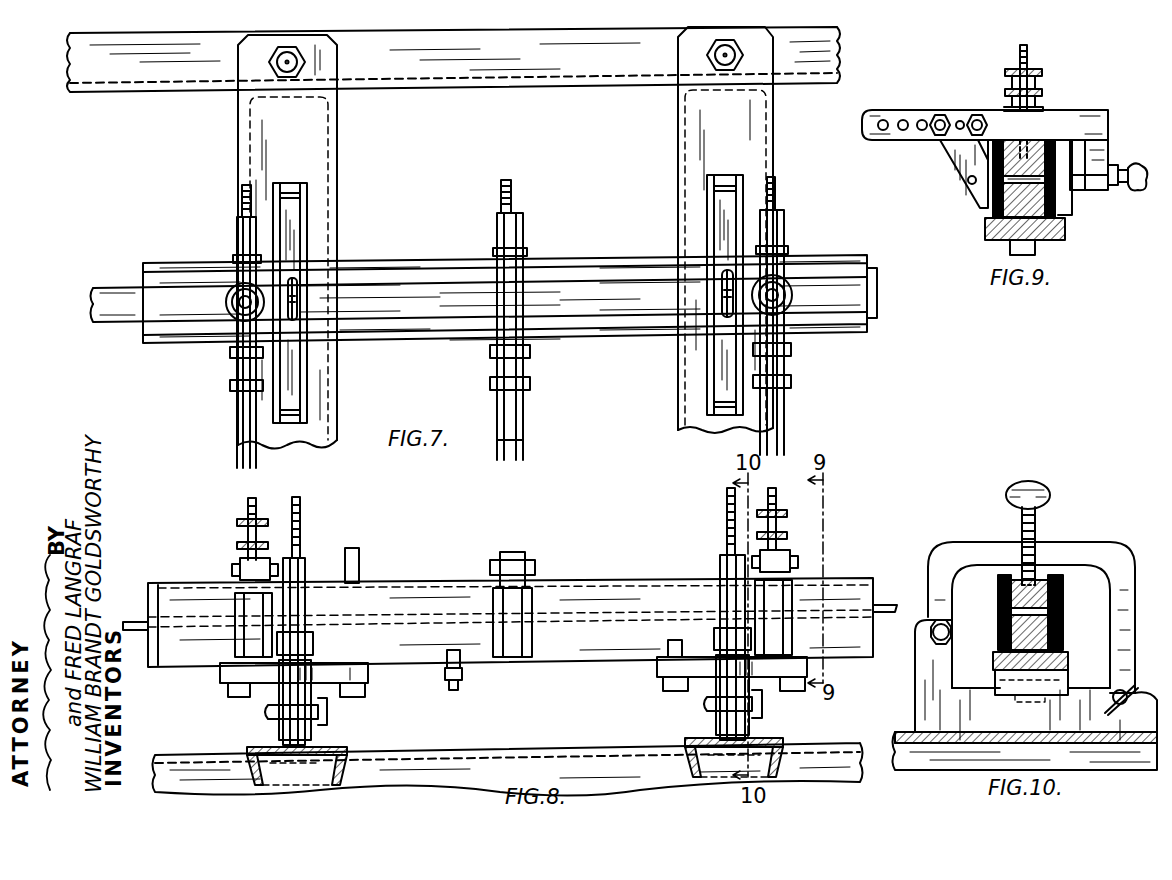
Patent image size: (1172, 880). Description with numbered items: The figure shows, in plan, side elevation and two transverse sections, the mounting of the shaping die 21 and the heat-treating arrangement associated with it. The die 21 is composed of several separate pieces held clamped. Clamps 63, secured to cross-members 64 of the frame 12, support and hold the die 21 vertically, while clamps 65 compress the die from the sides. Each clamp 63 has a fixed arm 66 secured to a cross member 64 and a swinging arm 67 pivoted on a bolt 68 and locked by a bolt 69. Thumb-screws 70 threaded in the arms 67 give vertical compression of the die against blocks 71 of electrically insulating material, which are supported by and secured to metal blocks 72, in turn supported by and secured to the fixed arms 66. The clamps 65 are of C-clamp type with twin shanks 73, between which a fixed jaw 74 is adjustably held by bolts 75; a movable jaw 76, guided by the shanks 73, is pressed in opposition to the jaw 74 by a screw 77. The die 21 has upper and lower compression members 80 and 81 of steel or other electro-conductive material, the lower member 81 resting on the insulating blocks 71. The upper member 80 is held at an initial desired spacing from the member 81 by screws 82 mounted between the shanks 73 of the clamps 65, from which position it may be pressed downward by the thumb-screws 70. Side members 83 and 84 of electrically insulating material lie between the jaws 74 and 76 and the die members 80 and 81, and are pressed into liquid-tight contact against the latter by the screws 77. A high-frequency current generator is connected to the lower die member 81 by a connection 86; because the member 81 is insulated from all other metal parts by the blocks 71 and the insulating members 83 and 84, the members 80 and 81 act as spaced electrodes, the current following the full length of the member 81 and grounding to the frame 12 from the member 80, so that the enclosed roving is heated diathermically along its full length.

In FIG. 7, the frame 12 is at (160, 85).
In FIG. 8, the frame 12 is at (558, 754).
In FIG. 7, the shaping die 21 is at (447, 345).
In FIG. 8, the shaping die 21 is at (571, 580).
In FIG. 7, the clamps 63 is at (300, 242).
In FIG. 8, the clamps 63 is at (305, 566).
In FIG. 10, the clamps 63 is at (1078, 542).
In FIG. 7, the cross-members 64 is at (340, 150).
In FIG. 8, the cross-members 64 is at (347, 750).
In FIG. 10, the cross-members 64 is at (910, 733).
In FIG. 7, the clamps 65 is at (237, 240).
In FIG. 8, the clamps 65 is at (513, 604).
In FIG. 9, the clamps 65 is at (1088, 110).
In FIG. 10, the fixed arm 66 is at (1090, 692).
In FIG. 10, the swinging arm 67 is at (1135, 620).
In FIG. 10, the bolt 68 is at (947, 624).
In FIG. 8, the bolt 69 is at (328, 712).
In FIG. 10, the bolt 69 is at (1128, 690).
In FIG. 7, the thumb-screws 70 is at (298, 312).
In FIG. 8, the thumb-screws 70 is at (301, 505).
In FIG. 10, the thumb-screws 70 is at (1026, 482).
In FIG. 9, the blocks 71 is at (985, 228).
In FIG. 10, the blocks 71 is at (993, 660).
In FIG. 8, the metal blocks 72 is at (222, 681).
In FIG. 10, the metal blocks 72 is at (995, 682).
In FIG. 7, the twin shanks 73 is at (497, 442).
In FIG. 9, the twin shanks 73 is at (890, 110).
In FIG. 9, the fixed jaw 74 is at (960, 150).
In FIG. 9, the bolts 75 is at (978, 115).
In FIG. 9, the movable jaw 76 is at (1072, 202).
In FIG. 7, the screw 77 is at (240, 197).
In FIG. 9, the screw 77 is at (1136, 192).
In FIG. 9, the upper compression member 80 is at (1035, 140).
In FIG. 10, the upper compression member 80 is at (1022, 580).
In FIG. 9, the lower compression member 81 is at (1055, 210).
In FIG. 10, the lower compression member 81 is at (1050, 632).
In FIG. 7, the screws 82 is at (232, 312).
In FIG. 8, the screws 82 is at (237, 521).
In FIG. 9, the screws 82 is at (1030, 72).
In FIG. 7, the side member 83 is at (603, 325).
In FIG. 9, the side member 83 is at (993, 190).
In FIG. 10, the side member 83 is at (998, 612).
In FIG. 7, the side member 84 is at (601, 278).
In FIG. 9, the side member 84 is at (1057, 165).
In FIG. 10, the side member 84 is at (1063, 600).
In FIG. 8, the connection 86 is at (462, 688).